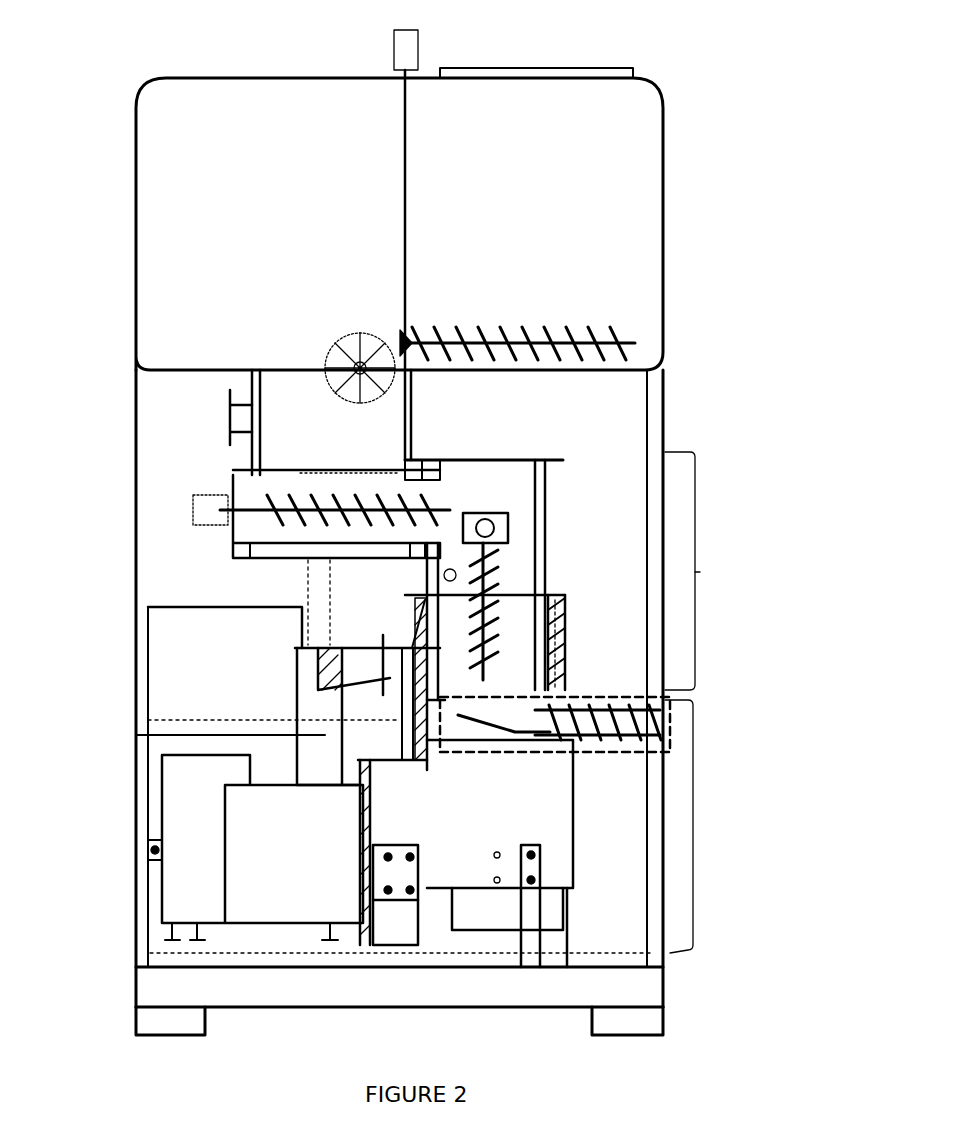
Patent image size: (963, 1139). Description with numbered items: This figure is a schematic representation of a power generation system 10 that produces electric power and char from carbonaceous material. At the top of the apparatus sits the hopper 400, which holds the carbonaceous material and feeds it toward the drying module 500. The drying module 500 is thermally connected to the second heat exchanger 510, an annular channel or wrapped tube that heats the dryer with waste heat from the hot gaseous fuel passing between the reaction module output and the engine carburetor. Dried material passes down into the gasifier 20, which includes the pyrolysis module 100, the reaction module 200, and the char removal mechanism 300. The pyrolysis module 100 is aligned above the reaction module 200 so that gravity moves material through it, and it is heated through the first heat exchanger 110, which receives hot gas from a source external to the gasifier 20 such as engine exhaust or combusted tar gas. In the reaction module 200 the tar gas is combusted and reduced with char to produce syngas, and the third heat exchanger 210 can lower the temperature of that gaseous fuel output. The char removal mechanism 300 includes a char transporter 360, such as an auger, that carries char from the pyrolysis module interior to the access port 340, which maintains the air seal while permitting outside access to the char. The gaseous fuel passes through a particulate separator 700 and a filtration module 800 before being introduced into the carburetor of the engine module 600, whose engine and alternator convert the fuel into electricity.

The power generation system 10 is at (122, 70).
The hopper 400 is at (636, 160).
The second heat exchanger 510 is at (422, 442).
The drying module 500 is at (284, 452).
The pyrolysis module 100 is at (507, 480).
The first heat exchanger 110 is at (560, 520).
The reaction module 200 is at (527, 628).
The third heat exchanger 210 is at (572, 664).
The gasifier 20 is at (700, 572).
The filtration module 800 is at (204, 640).
The particulate separator 700 is at (298, 700).
The char removal mechanism 300 is at (688, 709).
The access port 340 is at (668, 730).
The char transporter 360 is at (636, 735).
The engine module 600 is at (693, 837).